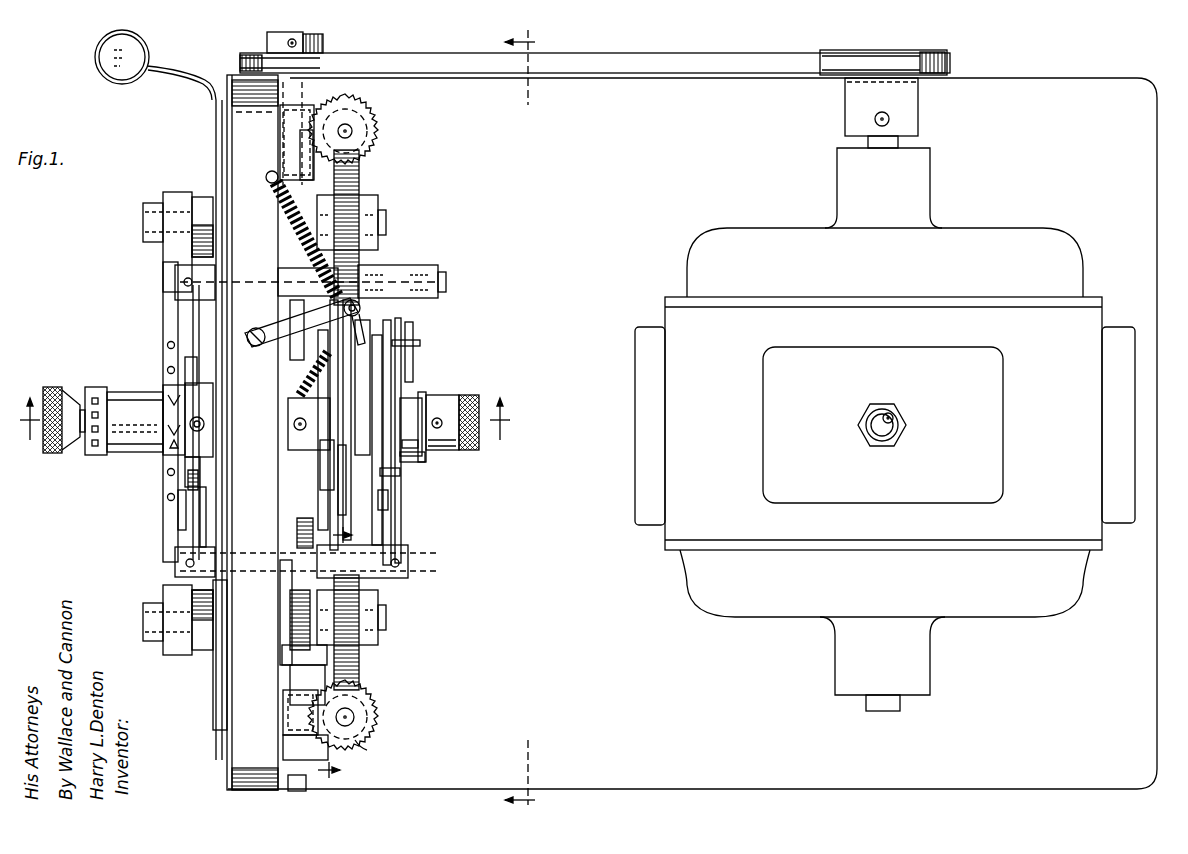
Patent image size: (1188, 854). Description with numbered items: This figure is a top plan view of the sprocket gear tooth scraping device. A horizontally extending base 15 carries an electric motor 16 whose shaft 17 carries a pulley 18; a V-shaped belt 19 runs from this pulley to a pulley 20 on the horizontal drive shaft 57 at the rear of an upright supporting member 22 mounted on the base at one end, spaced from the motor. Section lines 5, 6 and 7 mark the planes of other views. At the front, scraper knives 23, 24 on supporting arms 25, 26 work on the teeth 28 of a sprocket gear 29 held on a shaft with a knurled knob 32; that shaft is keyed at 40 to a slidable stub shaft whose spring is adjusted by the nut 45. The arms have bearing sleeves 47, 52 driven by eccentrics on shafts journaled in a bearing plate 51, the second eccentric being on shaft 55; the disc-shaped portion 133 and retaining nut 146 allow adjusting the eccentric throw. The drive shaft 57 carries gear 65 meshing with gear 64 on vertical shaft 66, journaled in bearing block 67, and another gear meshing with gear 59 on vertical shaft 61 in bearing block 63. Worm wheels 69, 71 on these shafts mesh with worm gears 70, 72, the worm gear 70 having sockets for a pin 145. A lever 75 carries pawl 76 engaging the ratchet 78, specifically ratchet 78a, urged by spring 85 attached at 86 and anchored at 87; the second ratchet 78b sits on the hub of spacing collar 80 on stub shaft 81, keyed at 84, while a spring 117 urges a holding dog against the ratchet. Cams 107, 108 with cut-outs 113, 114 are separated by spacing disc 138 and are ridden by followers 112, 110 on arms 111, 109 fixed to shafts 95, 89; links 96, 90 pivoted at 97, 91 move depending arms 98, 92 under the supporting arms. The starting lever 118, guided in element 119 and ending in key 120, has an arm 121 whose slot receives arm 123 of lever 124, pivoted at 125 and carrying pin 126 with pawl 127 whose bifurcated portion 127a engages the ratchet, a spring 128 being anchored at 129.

The section line 5- 5 is at (557, 424).
The section line 6- 6 is at (341, 654).
The section line 7- 7 is at (272, 427).
The supporting base 15 is at (985, 775).
The electric motor 16 is at (782, 603).
The motor shaft 17 is at (900, 143).
The pulley 18 is at (930, 76).
The V-shaped belt 19 is at (703, 62).
The pulley 20 is at (325, 52).
The upright supporting member 22 is at (238, 758).
The scraper knife 23 is at (186, 470).
The scraper knife 24 is at (168, 386).
The supporting arm 25 is at (178, 508).
The supporting arm 26 is at (172, 317).
The sprocket gear teeth 28 is at (98, 374).
The sprocket gear 29 is at (140, 450).
The knurled knob 32 is at (56, 385).
The key 40 is at (205, 424).
The adjustable retaining nut 45 is at (465, 450).
The bearing sleeve 47 is at (175, 655).
The bearing plate 51 is at (212, 720).
The bearing sleeve 52 is at (186, 183).
The shaft 55 is at (386, 218).
The drive shaft 57 is at (270, 33).
The gear 59 is at (382, 705).
The vertical shaft 61 is at (352, 718).
The bearing block 63 is at (295, 728).
The gear 64 is at (385, 122).
The gear 65 is at (279, 128).
The vertical shaft 66 is at (353, 132).
The bearing block 67 is at (296, 145).
The worm wheel 69 is at (370, 742).
The worm gear 70 is at (362, 660).
The worm wheel 71 is at (350, 125).
The worm gear 72 is at (362, 178).
The lever 75 is at (330, 470).
The pawl 76 is at (347, 508).
The disc 78 is at (352, 500).
The ratchet 78a is at (328, 481).
The second ratchet 78b is at (330, 489).
The spacing collar 80 is at (366, 387).
The stub shaft 81 is at (478, 405).
The key 84 is at (288, 425).
The spring 85 is at (292, 605).
The spring attachment 86 is at (298, 526).
The spring anchor 87 is at (282, 655).
The shaft 89 is at (174, 565).
The link 90 is at (200, 520).
The pivot connection 91 is at (188, 483).
The depending arm 92 is at (268, 455).
The shaft 95 is at (175, 283).
The link 96 is at (200, 323).
The pivot connection 97 is at (190, 357).
The depending arm 98 is at (197, 371).
The mutilated cam 107 is at (426, 396).
The mutilated cam 108 is at (391, 385).
The arm 109 is at (385, 546).
The cam follower 110 is at (398, 472).
The arm 111 is at (402, 322).
The cam follower 112 is at (410, 335).
The cut-out portion 113 is at (420, 450).
The cut-out portion 114 is at (388, 502).
The spring 117 is at (316, 373).
The starting lever 118 is at (220, 145).
The guiding element 119 is at (214, 123).
The key 120 is at (95, 55).
The arm 121 is at (262, 290).
The arm 123 is at (272, 365).
The lever 124 is at (272, 308).
The pivot 125 is at (255, 347).
The pin 126 is at (372, 292).
The pawl 127 is at (362, 318).
The bifurcated portion 127a is at (355, 360).
The spring 128 is at (284, 201).
The spring anchor 129 is at (266, 166).
The disc-shaped portion 133 is at (203, 645).
The spacing disc 138 is at (383, 368).
The pin 145 is at (386, 608).
The retaining nut 146 is at (145, 215).